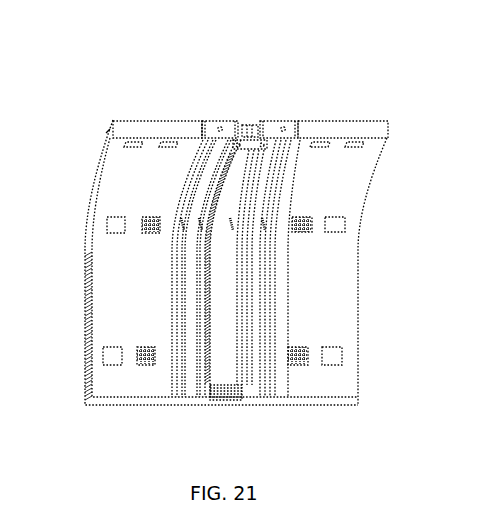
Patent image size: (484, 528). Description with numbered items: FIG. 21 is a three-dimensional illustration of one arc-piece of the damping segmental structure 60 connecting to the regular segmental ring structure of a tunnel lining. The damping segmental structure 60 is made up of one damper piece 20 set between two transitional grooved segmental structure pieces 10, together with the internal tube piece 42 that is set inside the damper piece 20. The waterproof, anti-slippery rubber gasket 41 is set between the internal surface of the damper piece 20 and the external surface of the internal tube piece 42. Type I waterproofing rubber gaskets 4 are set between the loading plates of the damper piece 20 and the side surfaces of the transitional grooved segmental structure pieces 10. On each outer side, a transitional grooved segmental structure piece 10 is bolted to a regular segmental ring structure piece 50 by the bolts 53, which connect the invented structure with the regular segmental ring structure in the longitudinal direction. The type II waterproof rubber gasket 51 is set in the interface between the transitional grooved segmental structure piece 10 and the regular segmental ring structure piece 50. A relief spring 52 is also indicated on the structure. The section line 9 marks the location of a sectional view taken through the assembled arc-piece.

The Type I waterproofing rubber gasket 4 is at (239, 405).
The section line 9- 9 is at (73, 357).
The transitional grooved segmental structure piece 10 is at (235, 117).
The damper piece 20 is at (265, 117).
The waterproof rubber gasket for internal tube 41 is at (228, 138).
The internal tube piece 42 is at (265, 146).
The regular segmental ring structure piece 50 is at (202, 117).
The type II waterproof rubber gasket 51 is at (175, 400).
The relief spring 52 is at (155, 233).
The bolts connecting with regular segmental ring structure 53 is at (313, 227).
The damping segmental structure piece 60 is at (297, 60).